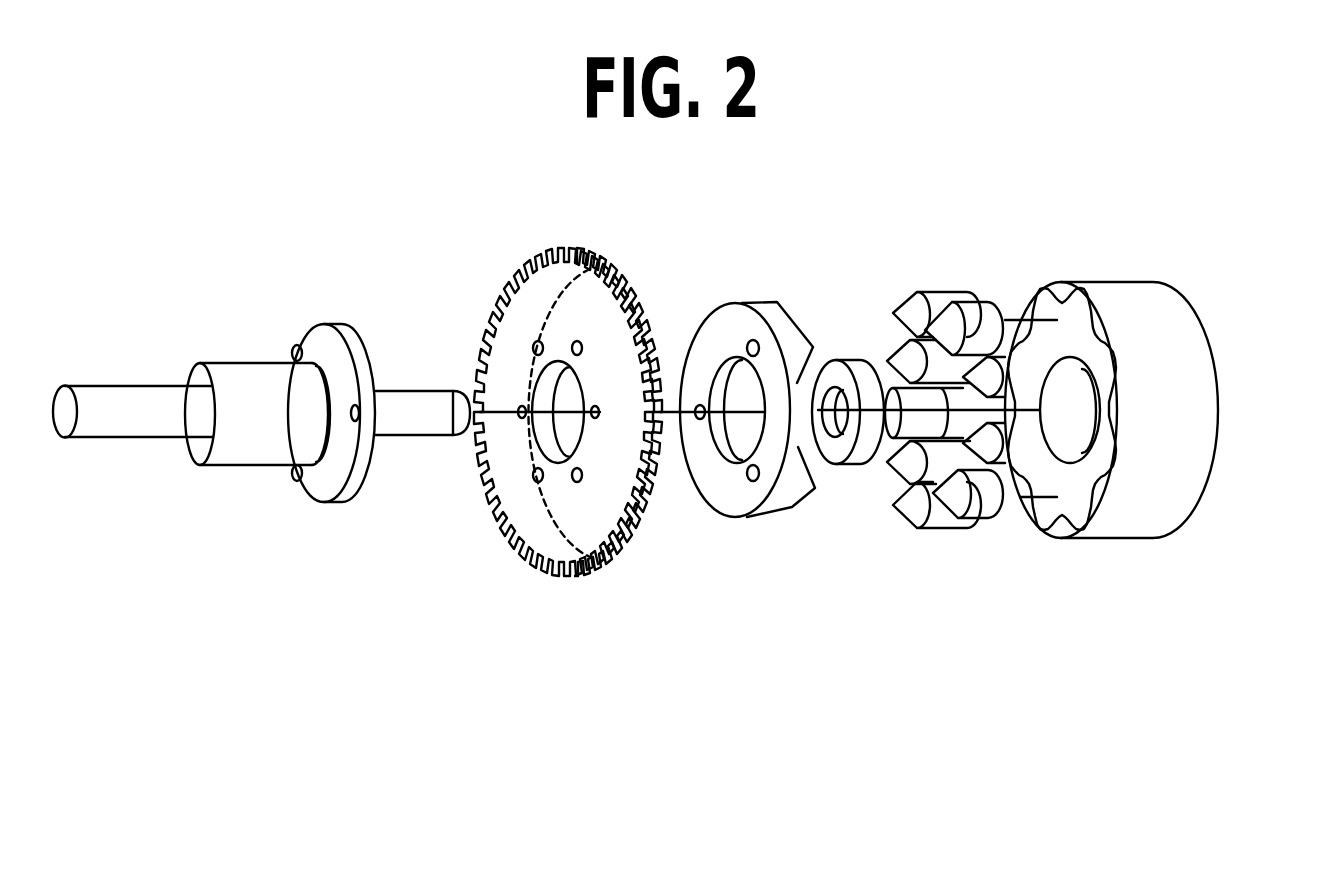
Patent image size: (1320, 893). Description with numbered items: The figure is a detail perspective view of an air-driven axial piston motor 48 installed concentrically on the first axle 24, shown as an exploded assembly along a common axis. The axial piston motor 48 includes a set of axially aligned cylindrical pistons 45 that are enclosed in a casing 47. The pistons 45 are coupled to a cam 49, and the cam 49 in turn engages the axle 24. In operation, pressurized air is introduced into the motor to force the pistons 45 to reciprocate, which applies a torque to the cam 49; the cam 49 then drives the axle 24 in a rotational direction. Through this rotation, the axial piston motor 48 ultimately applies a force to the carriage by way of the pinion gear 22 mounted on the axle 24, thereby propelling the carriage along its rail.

The pinion gear 22 is at (510, 273).
The first axle 24 is at (250, 363).
The cylindrical pistons 45 is at (903, 290).
The casing 47 is at (1070, 282).
The axial piston motor 48 is at (1302, 619).
The cam 49 is at (713, 303).